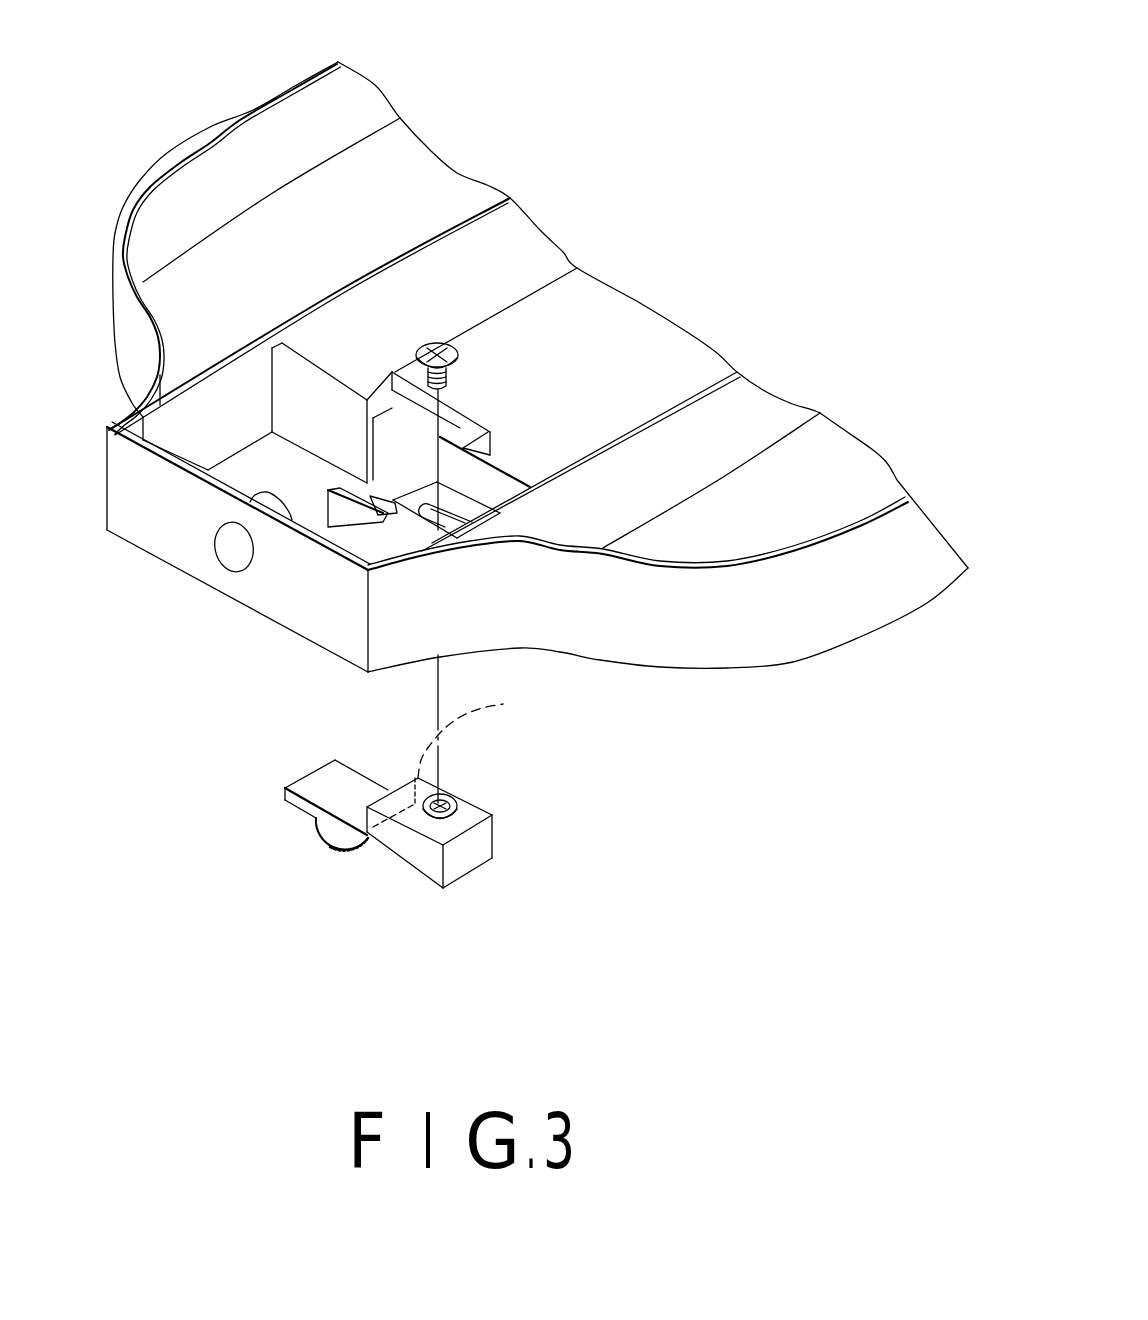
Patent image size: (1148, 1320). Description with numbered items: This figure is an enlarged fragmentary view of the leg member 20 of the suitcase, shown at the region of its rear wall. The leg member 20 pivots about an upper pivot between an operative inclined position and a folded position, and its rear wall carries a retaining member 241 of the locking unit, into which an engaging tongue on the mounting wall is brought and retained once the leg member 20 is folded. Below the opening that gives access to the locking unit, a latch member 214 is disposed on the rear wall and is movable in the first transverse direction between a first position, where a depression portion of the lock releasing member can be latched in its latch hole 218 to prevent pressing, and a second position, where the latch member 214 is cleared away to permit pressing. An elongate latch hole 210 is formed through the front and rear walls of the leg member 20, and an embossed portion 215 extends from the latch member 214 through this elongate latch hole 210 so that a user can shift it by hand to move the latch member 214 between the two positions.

The leg member 20 is at (270, 100).
The retaining member 241 is at (468, 420).
The elongate latch hole 210 is at (377, 510).
The latch member 214 is at (467, 817).
The embossed portion 215 is at (337, 845).
The latch hole 218 is at (503, 704).